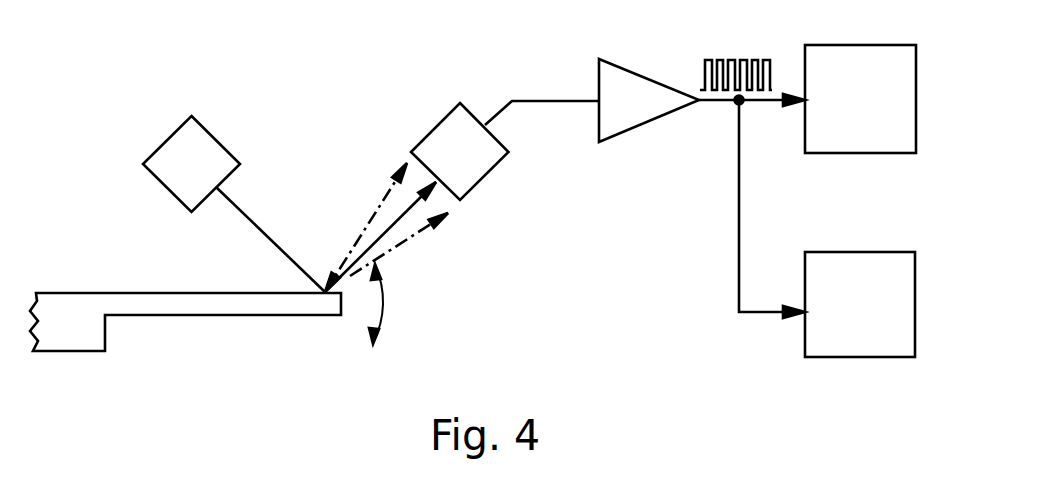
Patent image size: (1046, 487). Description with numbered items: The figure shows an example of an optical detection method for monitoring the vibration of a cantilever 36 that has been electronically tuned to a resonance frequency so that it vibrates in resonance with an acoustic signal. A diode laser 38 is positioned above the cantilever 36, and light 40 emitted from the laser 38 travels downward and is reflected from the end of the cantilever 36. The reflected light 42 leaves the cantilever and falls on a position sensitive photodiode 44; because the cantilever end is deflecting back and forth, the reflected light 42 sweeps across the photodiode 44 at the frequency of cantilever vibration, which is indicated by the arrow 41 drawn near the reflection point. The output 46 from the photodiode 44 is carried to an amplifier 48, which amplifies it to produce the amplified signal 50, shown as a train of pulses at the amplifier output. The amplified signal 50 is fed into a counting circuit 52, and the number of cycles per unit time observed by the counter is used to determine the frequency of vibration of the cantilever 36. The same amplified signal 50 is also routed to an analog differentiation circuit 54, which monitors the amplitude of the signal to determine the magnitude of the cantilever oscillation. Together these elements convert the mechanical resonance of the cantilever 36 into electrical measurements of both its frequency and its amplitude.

The cantilever 36 is at (148, 293).
The diode laser 38 is at (191, 164).
The light 40 is at (247, 213).
The arrow 41 is at (385, 307).
The reflected light 42 is at (387, 232).
The position sensitive photodiode 44 is at (460, 151).
The output 46 is at (505, 101).
The amplifier 48 is at (649, 100).
The amplified signal 50 is at (738, 58).
The counting circuit 52 is at (860, 99).
The analog differentiation circuit 54 is at (860, 304).